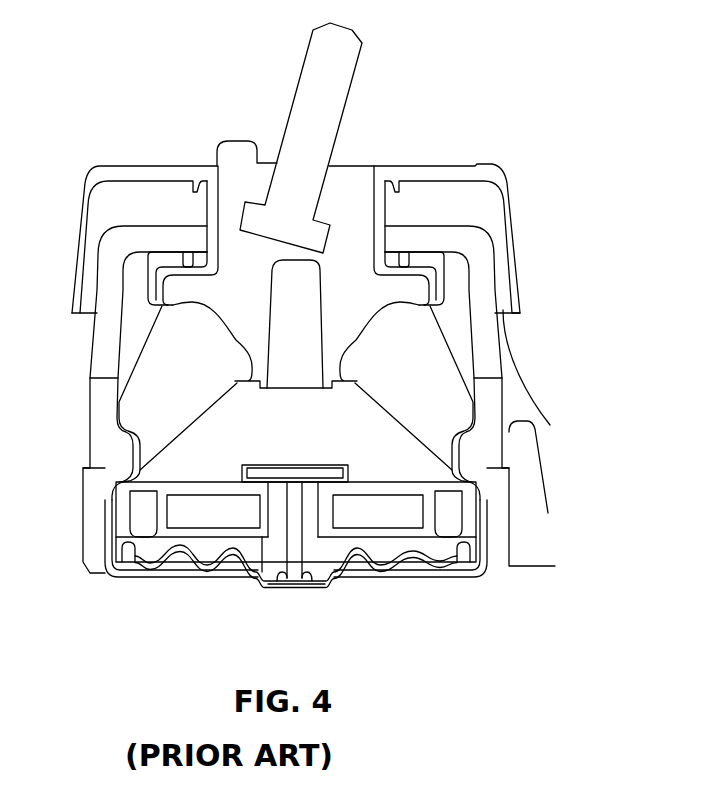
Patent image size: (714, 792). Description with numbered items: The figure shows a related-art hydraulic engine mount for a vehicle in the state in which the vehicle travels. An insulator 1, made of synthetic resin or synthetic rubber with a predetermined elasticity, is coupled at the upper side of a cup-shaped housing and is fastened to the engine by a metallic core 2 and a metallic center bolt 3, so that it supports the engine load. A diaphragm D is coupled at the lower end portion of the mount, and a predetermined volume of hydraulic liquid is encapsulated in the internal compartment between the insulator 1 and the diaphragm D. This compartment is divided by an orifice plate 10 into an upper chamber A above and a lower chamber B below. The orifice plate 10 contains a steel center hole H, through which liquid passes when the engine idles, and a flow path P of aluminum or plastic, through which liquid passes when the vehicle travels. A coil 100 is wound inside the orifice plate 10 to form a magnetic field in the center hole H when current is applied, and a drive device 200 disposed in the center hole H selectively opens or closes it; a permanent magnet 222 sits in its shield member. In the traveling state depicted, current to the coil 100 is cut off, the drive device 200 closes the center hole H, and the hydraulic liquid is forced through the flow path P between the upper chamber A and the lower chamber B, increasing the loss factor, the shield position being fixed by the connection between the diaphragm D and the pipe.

The insulator 1 is at (157, 363).
The metallic core 2 is at (357, 176).
The metallic center bolt 3 is at (300, 107).
The orifice plate 10 is at (122, 528).
The coil 100 is at (380, 512).
The drive device 200 is at (304, 544).
The permanent magnet 222 is at (340, 474).
The upper chamber A is at (170, 443).
The lower chamber B is at (260, 550).
The diaphragm D is at (292, 588).
The center hole H is at (262, 511).
The flow path P is at (144, 514).